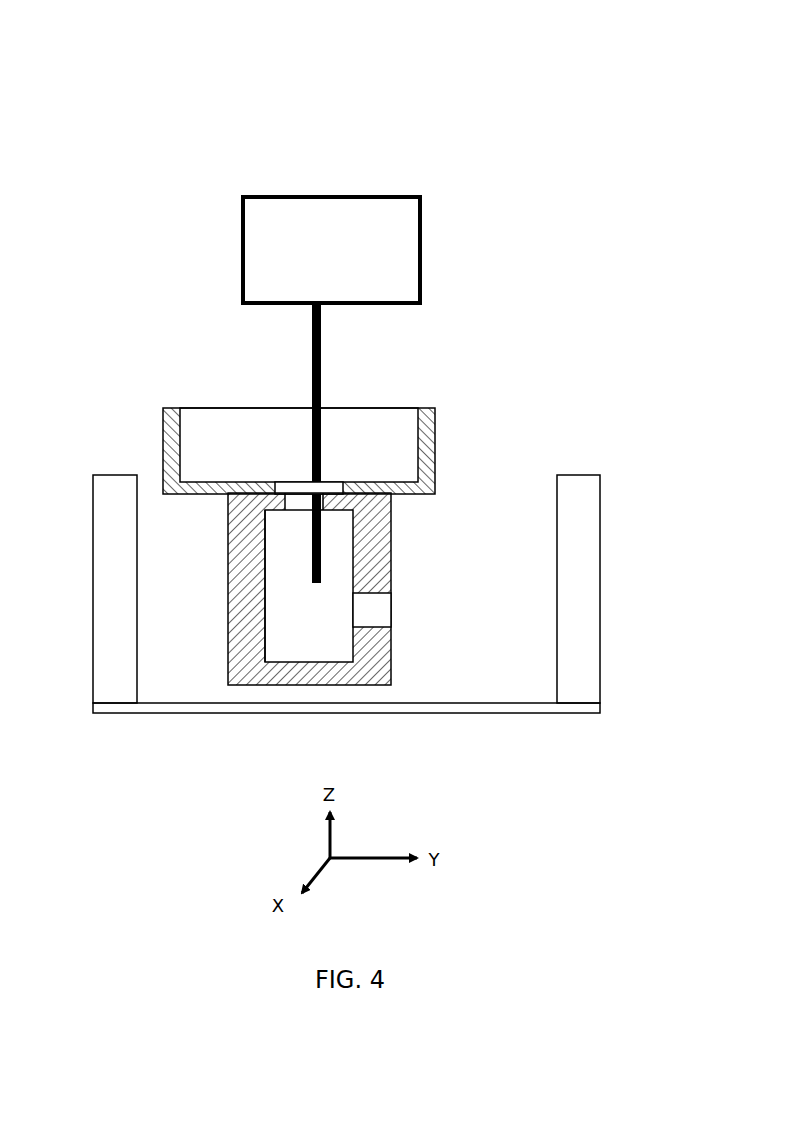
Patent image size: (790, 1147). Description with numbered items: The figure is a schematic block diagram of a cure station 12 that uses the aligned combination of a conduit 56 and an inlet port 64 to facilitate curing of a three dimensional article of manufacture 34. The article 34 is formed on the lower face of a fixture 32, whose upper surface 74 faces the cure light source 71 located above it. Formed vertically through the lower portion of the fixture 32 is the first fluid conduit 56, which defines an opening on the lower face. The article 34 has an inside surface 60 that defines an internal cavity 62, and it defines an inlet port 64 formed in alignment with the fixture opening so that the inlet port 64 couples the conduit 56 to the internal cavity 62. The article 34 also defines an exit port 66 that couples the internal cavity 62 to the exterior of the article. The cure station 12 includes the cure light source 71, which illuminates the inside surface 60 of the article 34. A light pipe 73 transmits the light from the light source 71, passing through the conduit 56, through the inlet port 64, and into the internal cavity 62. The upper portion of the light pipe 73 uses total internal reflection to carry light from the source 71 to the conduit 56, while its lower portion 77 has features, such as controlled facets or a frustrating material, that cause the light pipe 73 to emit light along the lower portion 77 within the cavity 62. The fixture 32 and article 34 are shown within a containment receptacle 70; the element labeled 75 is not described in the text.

The cure station 12 is at (417, 68).
The cure light source 71 is at (421, 241).
The light conduit 75 is at (322, 341).
The light pipe 73 is at (322, 395).
The fixture 32 is at (435, 448).
The first fluid conduit 56 is at (283, 483).
The upper surface 74 is at (403, 485).
The three dimensional article of manufacture 34 is at (250, 557).
The inlet port 64 is at (298, 502).
The lower portion 77 is at (318, 560).
The inside surface 60 is at (265, 597).
The internal cavity 62 is at (300, 654).
The exit port 66 is at (377, 612).
The containment receptacle 70 is at (588, 532).